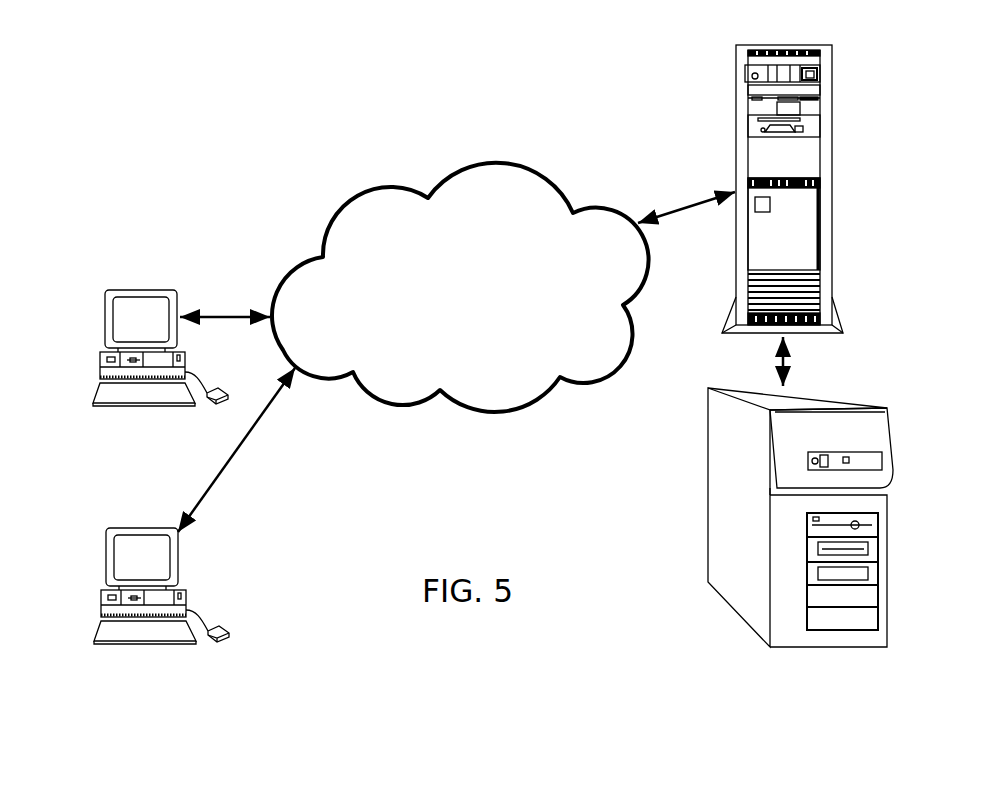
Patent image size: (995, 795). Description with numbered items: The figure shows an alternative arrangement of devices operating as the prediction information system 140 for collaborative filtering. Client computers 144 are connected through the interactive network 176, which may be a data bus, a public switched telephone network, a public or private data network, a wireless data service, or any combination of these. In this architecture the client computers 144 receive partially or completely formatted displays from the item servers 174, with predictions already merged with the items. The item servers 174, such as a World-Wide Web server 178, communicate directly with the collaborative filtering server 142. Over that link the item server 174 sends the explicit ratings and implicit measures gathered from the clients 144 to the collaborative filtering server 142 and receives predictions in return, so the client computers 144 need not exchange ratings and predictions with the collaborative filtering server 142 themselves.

The information system 140 is at (552, 85).
The collaborative filtering server 142 is at (800, 388).
The client computer 144 is at (130, 290).
The item server 174 is at (760, 45).
The interactive network 176 is at (513, 163).
The World-Wide Web server 178 is at (806, 169).